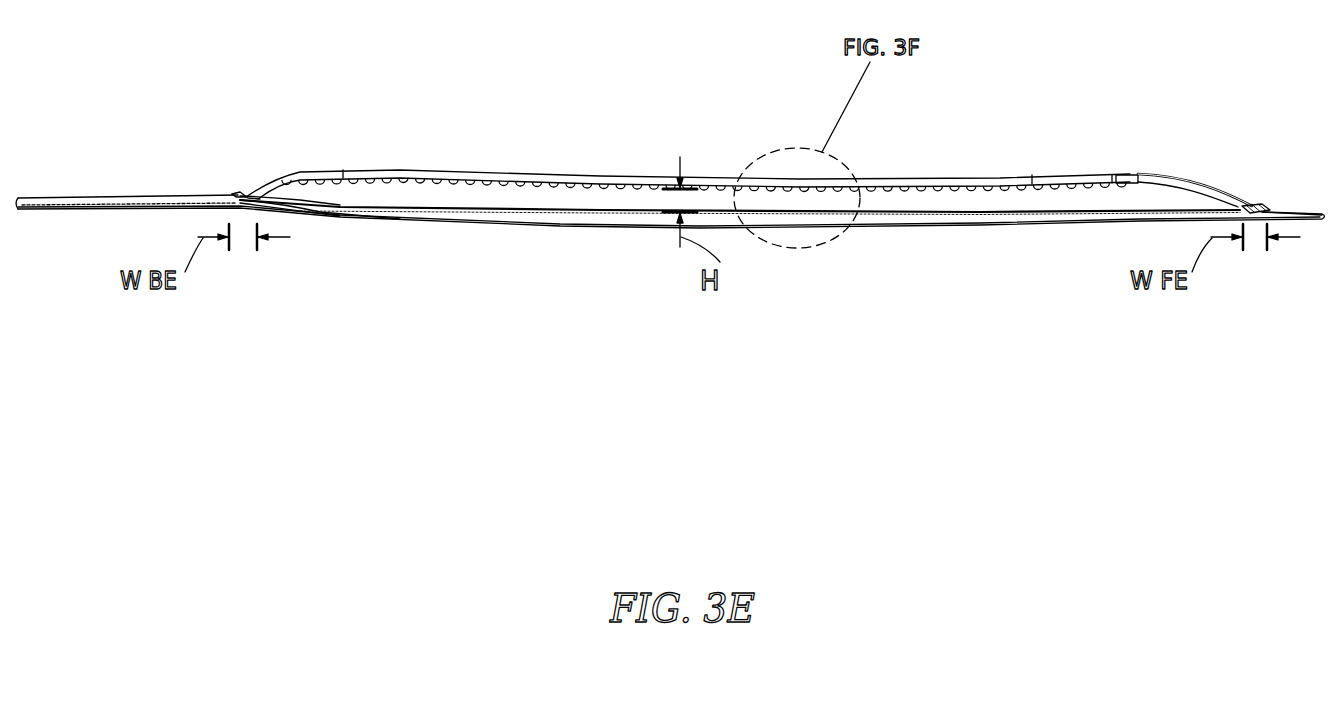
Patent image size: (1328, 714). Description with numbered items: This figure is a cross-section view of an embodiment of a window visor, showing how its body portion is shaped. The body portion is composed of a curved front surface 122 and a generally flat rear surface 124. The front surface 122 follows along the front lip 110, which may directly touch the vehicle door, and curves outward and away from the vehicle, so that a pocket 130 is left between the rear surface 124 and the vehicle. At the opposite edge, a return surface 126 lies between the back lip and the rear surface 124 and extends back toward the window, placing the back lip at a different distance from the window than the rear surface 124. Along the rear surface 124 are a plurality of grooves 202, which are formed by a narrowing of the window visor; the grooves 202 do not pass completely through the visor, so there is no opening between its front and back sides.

The front lip 110 is at (1257, 203).
The front surface 122 is at (1185, 153).
The rear surface 124 is at (535, 168).
The return surface 126 is at (245, 193).
The pocket 130 is at (888, 206).
The grooves 202 is at (540, 184).